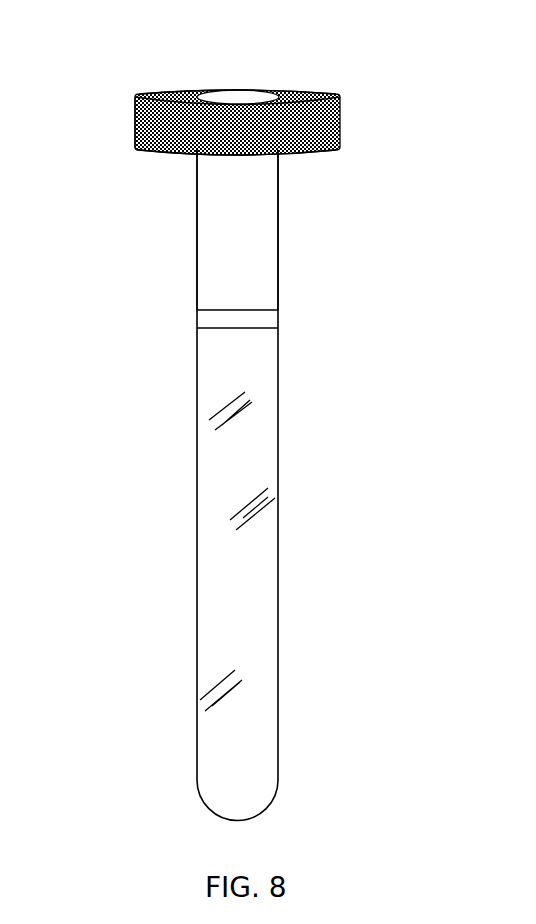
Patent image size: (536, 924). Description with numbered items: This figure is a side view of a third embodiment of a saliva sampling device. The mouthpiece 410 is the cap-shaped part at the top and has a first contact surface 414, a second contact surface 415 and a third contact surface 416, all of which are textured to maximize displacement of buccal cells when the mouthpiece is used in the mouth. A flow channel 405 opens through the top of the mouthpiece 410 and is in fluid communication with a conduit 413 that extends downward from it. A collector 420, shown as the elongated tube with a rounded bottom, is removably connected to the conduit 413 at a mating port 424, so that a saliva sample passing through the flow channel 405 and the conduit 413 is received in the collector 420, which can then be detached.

The flow channel 405 is at (239, 97).
The mouthpiece 410 is at (239, 127).
The conduit 413 is at (285, 246).
The first contact surface 414 is at (140, 172).
The second contact surface 415 is at (138, 140).
The third contact surface 416 is at (165, 92).
The collector 420 is at (215, 566).
The mating port 424 is at (285, 321).